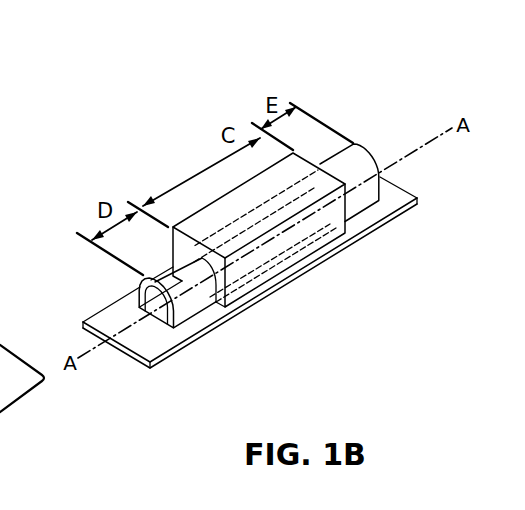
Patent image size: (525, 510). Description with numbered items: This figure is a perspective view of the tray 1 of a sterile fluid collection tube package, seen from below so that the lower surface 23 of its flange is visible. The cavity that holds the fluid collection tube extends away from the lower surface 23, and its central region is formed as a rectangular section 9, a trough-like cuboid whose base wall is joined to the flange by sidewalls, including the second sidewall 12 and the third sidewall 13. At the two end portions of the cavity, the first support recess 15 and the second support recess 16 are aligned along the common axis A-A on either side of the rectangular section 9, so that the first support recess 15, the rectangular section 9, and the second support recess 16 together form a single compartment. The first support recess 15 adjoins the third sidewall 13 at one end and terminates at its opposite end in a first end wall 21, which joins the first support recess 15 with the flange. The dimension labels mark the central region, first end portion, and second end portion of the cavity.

The tray 1 is at (146, 347).
The rectangular section 9 is at (240, 218).
The second sidewall 12 is at (285, 250).
The third sidewall 13 is at (220, 270).
The first support recess 15 is at (179, 277).
The second support recess 16 is at (357, 167).
The first end wall 21 is at (153, 302).
The lower surface 23 is at (362, 224).